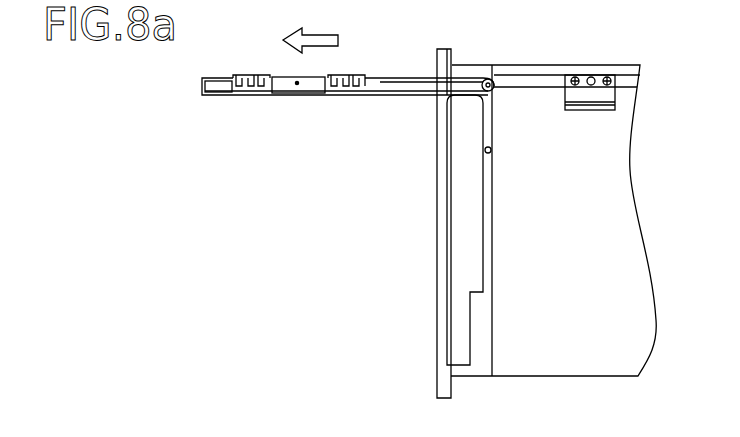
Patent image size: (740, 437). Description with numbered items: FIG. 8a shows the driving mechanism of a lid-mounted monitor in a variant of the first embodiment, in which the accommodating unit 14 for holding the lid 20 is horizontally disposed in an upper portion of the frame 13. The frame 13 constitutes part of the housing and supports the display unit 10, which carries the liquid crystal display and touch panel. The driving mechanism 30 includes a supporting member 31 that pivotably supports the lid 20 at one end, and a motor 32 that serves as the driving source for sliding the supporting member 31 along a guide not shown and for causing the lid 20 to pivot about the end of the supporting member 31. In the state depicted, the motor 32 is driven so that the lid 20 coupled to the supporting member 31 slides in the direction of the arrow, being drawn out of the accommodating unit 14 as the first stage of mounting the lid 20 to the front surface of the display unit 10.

The display unit 10 is at (462, 357).
The frame 13 is at (443, 55).
The accommodating unit 14 is at (479, 62).
The lid 20 is at (270, 74).
The driving mechanism 30 is at (593, 62).
The supporting member 31 is at (534, 82).
The motor 32 is at (600, 94).